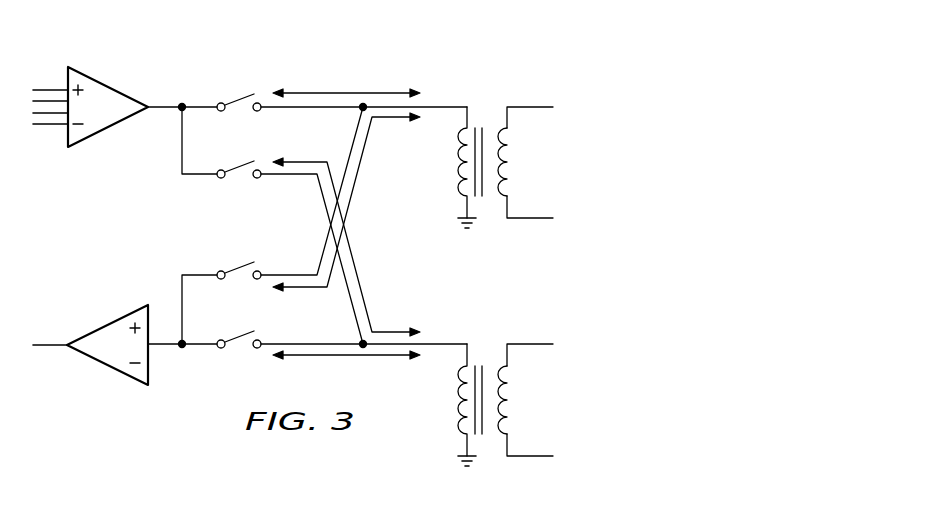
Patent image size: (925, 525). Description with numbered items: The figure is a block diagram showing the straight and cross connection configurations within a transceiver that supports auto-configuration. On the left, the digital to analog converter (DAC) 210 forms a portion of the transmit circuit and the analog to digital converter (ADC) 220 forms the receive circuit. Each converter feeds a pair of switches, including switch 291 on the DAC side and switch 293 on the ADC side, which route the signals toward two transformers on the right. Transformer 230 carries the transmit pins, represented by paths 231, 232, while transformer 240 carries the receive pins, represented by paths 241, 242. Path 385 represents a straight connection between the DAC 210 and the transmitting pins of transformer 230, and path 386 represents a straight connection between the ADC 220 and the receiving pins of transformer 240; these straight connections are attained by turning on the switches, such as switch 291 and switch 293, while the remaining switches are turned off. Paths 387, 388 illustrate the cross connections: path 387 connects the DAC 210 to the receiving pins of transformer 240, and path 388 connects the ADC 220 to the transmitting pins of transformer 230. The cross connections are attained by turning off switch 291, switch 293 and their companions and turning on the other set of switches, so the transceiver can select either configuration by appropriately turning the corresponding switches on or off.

The digital to analog converter (DAC) 210 is at (105, 85).
The analog to digital converter (ADC) 220 is at (104, 364).
The switch 291 is at (246, 97).
The switch 293 is at (246, 268).
The path 385 is at (443, 106).
The path 386 is at (443, 343).
The path 387 is at (352, 300).
The path 388 is at (352, 148).
The transformer 230 is at (500, 152).
The path 231 is at (530, 106).
The path 232 is at (530, 219).
The transformer 240 is at (500, 410).
The path 241 is at (530, 343).
The path 242 is at (530, 457).